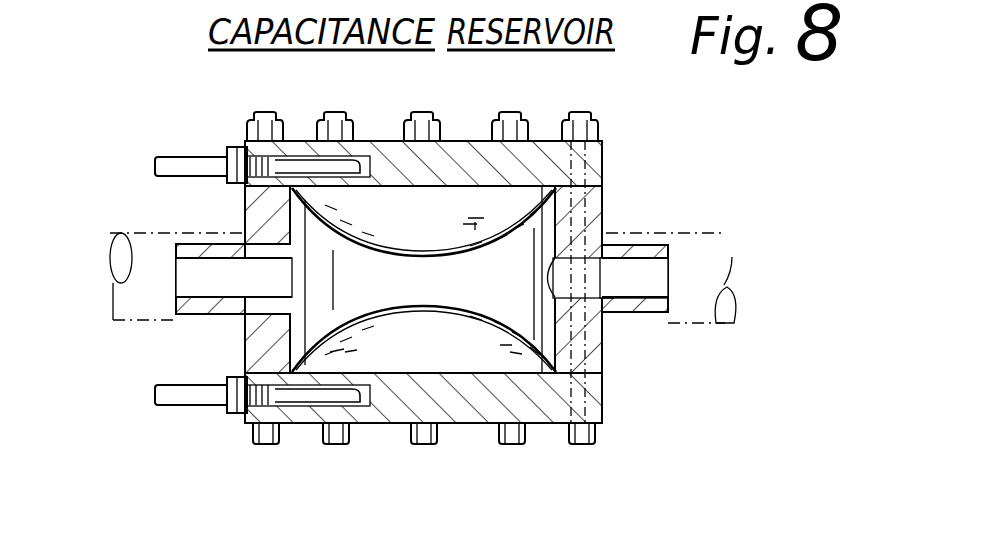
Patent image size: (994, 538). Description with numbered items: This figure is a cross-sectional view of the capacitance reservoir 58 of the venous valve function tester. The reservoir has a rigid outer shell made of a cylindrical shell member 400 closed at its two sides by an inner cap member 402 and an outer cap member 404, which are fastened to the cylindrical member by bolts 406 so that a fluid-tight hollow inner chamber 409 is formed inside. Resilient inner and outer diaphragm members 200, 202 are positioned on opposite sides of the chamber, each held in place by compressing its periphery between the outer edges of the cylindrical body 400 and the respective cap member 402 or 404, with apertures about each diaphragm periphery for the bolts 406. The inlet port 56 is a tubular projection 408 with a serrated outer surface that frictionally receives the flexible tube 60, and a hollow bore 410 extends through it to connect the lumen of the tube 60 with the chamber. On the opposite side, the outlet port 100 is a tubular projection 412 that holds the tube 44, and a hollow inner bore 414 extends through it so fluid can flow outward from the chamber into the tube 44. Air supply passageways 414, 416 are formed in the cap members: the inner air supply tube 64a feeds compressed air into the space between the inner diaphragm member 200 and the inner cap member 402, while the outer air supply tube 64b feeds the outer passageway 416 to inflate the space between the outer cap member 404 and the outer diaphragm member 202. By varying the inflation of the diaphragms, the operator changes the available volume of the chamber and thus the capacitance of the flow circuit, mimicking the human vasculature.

The inner cap member 402 is at (604, 141).
The outer cap member 404 is at (595, 393).
The cylindrical shell member 400 is at (603, 200).
The outer air supply passageway 416 is at (248, 364).
The tubular projection 412 is at (182, 318).
The hollow inner bore 414 is at (279, 277).
The tubular projection 408 is at (640, 313).
The hollow bore 410 is at (658, 277).
The chamber 409 is at (506, 296).
The inner diaphragm member 200 is at (425, 250).
The outer diaphragm member 202 is at (407, 312).
The bolts 406 is at (283, 78).
The inner air supply tube 64a is at (212, 120).
The outer air supply tube 64b is at (202, 408).
The outlet port 100 is at (175, 280).
The tube 44 is at (150, 232).
The inlet port 56 is at (672, 280).
The flexible tube 60 is at (712, 245).
The capacitance reservoir 58 is at (392, 448).